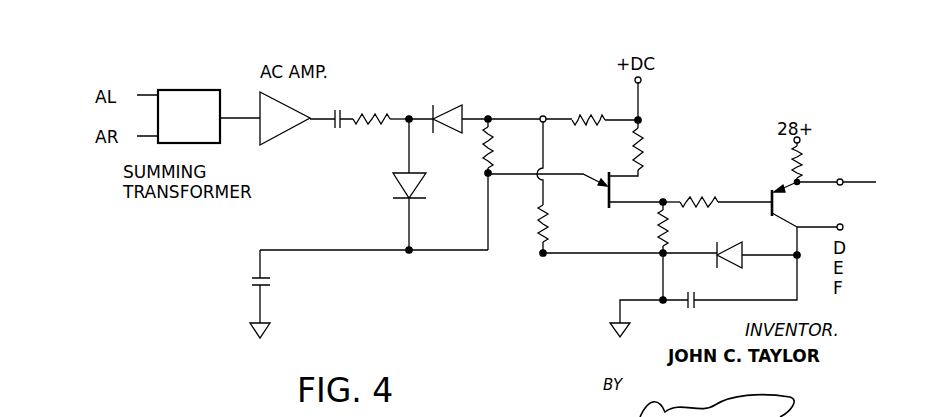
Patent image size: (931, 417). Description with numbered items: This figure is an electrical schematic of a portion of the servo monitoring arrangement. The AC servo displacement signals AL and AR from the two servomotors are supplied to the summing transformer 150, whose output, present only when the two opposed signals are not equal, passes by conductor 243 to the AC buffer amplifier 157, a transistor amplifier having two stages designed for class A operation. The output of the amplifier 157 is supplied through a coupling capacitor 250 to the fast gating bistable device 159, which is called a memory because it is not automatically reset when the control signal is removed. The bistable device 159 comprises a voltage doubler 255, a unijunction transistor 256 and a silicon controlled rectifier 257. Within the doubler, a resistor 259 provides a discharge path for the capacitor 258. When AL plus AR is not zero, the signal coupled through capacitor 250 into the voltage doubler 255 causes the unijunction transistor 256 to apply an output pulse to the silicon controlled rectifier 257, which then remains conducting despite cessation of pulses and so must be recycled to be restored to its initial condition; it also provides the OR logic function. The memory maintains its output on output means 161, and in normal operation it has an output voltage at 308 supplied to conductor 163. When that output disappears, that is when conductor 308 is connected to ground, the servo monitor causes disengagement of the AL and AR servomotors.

The summing transformer 150 is at (183, 92).
The AC buffer amplifier 157 is at (283, 105).
The conductor 243 is at (250, 121).
The coupling capacitor 250 is at (340, 116).
The voltage doubler 255 is at (471, 177).
The bistable device 159 is at (595, 163).
The unijunction transistor 256 is at (607, 190).
The output means 161 is at (645, 198).
The resistor 259 is at (657, 218).
The capacitor 258 is at (270, 285).
The silicon controlled rectifier 257 is at (770, 192).
The conductor 308 is at (810, 181).
The conductor 163 is at (862, 180).